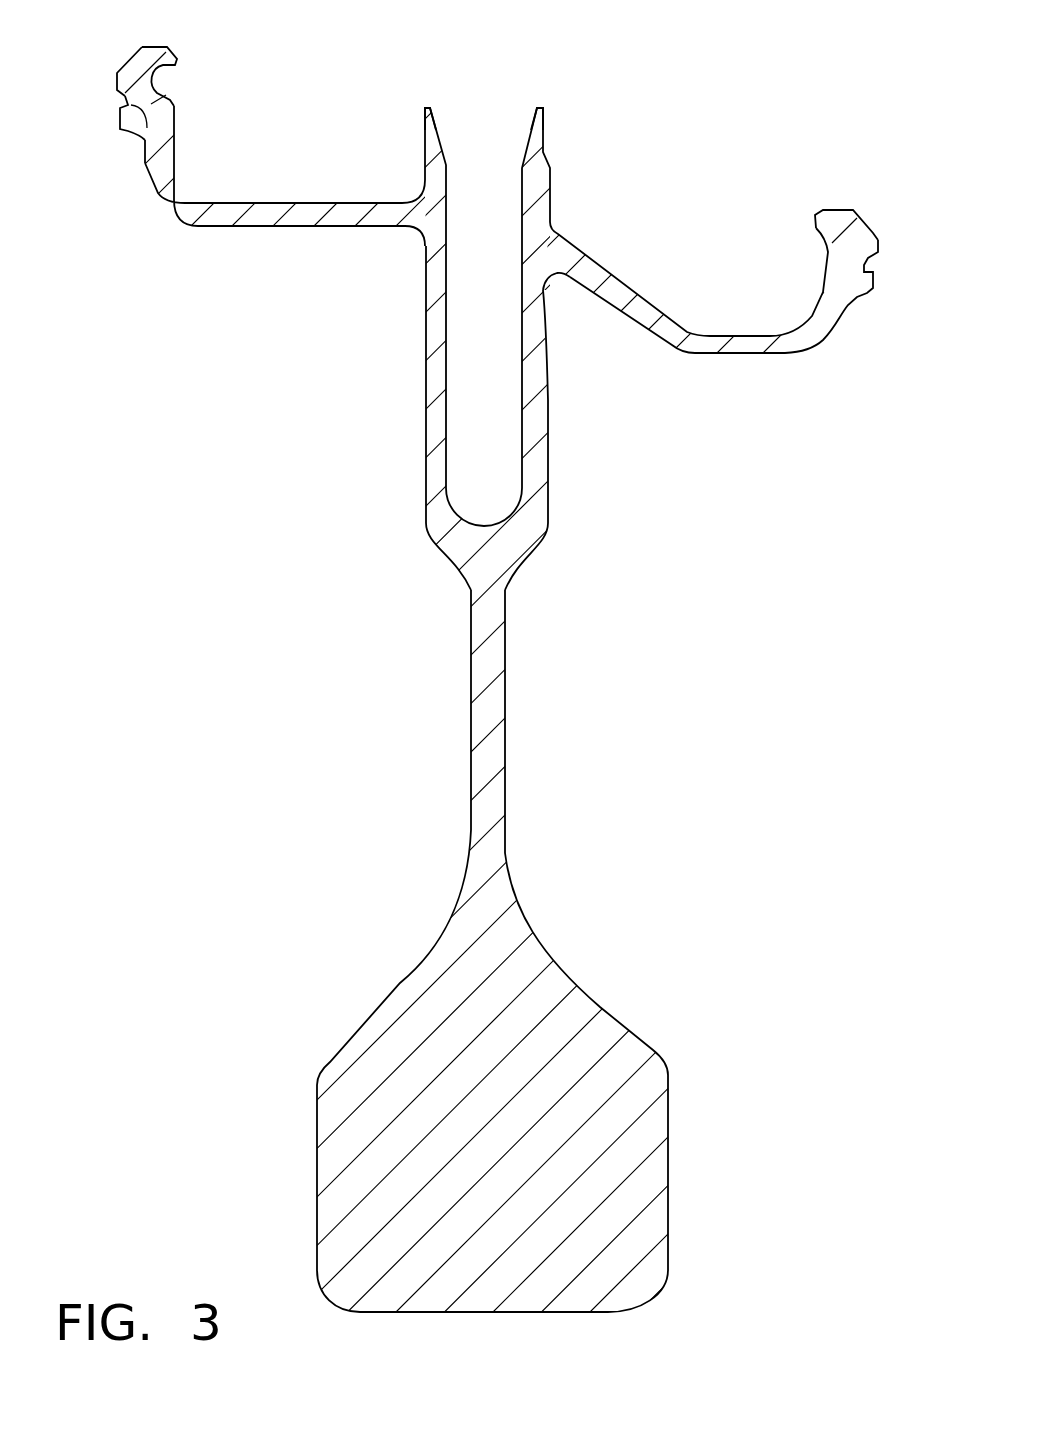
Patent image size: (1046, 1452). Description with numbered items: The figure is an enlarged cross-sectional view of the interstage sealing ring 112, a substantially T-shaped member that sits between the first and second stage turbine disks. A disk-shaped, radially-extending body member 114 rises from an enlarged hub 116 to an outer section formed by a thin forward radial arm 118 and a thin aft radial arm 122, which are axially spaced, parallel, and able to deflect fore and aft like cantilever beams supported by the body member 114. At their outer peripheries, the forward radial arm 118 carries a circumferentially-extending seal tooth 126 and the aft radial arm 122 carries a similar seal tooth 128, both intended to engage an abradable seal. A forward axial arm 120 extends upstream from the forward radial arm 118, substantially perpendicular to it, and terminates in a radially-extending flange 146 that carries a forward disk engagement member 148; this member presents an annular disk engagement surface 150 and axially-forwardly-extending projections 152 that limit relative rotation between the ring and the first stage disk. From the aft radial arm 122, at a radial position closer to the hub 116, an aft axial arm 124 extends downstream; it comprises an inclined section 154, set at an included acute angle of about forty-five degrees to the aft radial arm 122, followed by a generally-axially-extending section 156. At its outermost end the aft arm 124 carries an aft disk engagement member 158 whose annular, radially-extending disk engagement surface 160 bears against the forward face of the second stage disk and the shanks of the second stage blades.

The interstage sealing ring 112 is at (495, 726).
The body member 114 is at (505, 752).
The hub 116 is at (625, 1160).
The forward radial arm 118 is at (432, 376).
The forward axial arm 120 is at (305, 203).
The aft radial arm 122 is at (540, 372).
The aft axial arm 124 is at (655, 310).
The seal tooth 126 is at (425, 107).
The seal tooth 128 is at (538, 107).
The flange 146 is at (152, 104).
The forward disk engagement member 148 is at (152, 50).
The disk engagement surface 150 is at (117, 88).
The projections 152 is at (127, 130).
The inclined section 154 is at (636, 306).
The generally-axially-extending section 156 is at (745, 352).
The aft disk engagement member 158 is at (842, 215).
The disk engagement surface 160 is at (880, 248).